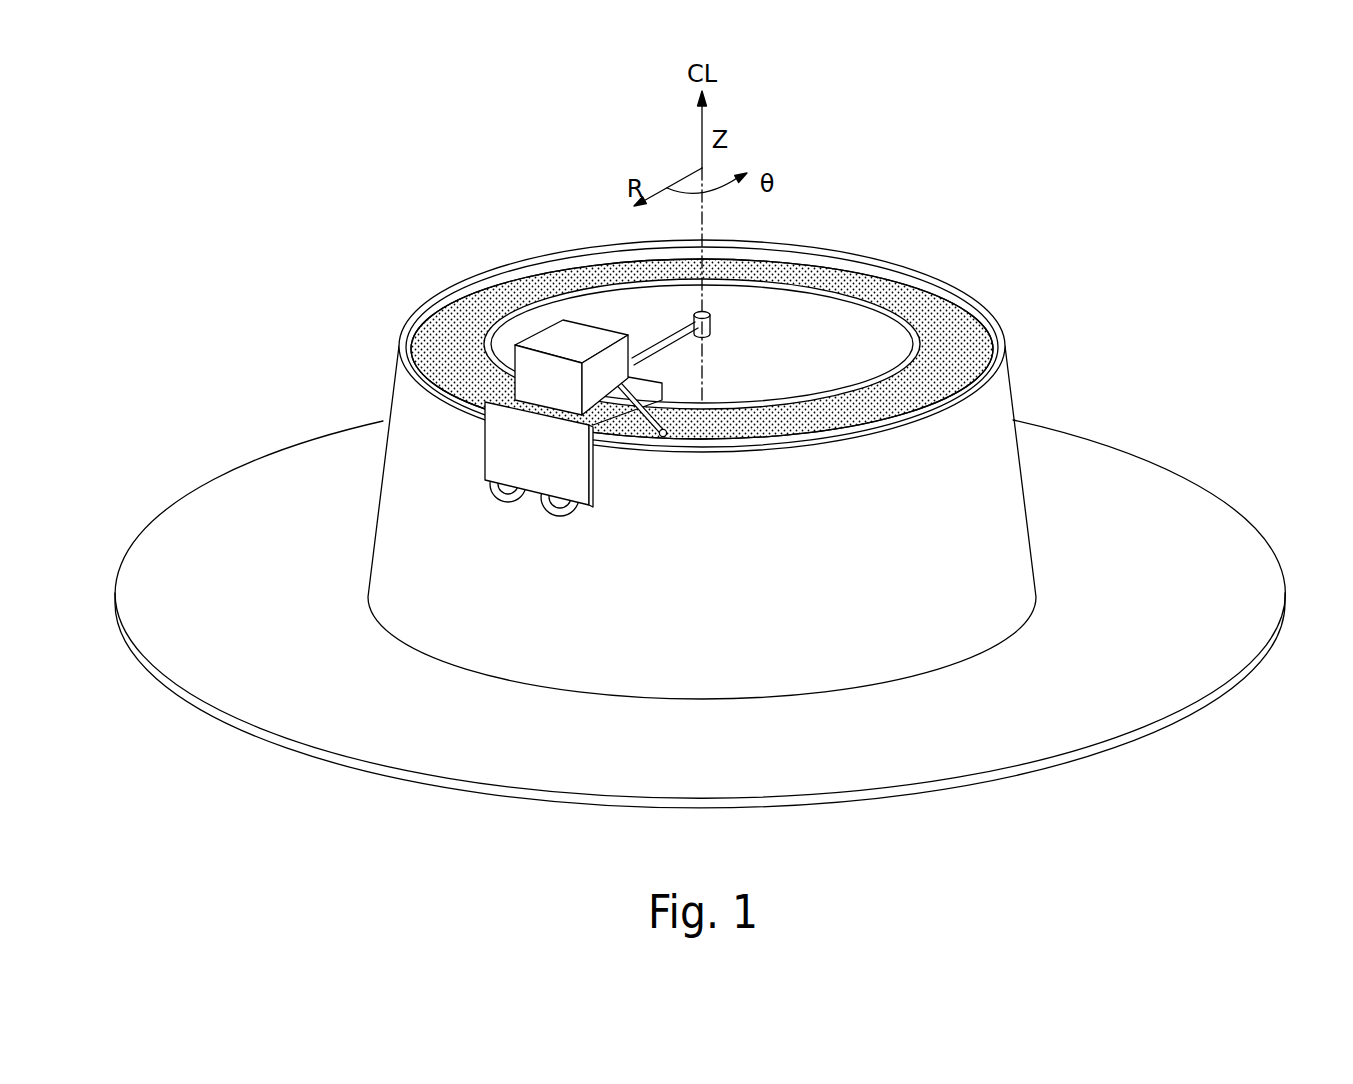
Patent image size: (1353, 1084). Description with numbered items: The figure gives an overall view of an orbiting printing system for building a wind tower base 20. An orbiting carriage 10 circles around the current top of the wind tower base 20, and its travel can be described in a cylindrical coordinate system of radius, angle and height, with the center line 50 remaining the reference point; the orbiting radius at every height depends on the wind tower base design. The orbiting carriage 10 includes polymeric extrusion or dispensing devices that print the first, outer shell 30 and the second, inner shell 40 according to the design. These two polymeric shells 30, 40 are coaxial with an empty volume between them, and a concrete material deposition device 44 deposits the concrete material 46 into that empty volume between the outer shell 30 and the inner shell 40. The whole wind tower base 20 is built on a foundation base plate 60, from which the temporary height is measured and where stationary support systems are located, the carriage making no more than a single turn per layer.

The orbiting carriage 10 is at (577, 468).
The wind tower base 20 is at (1005, 520).
The outer shell 30 is at (866, 250).
The inner shell 40 is at (888, 310).
The concrete material deposition device 44 is at (557, 337).
The concrete material 46 is at (962, 337).
The center line 50 is at (702, 362).
The foundation base plate 60 is at (1118, 463).